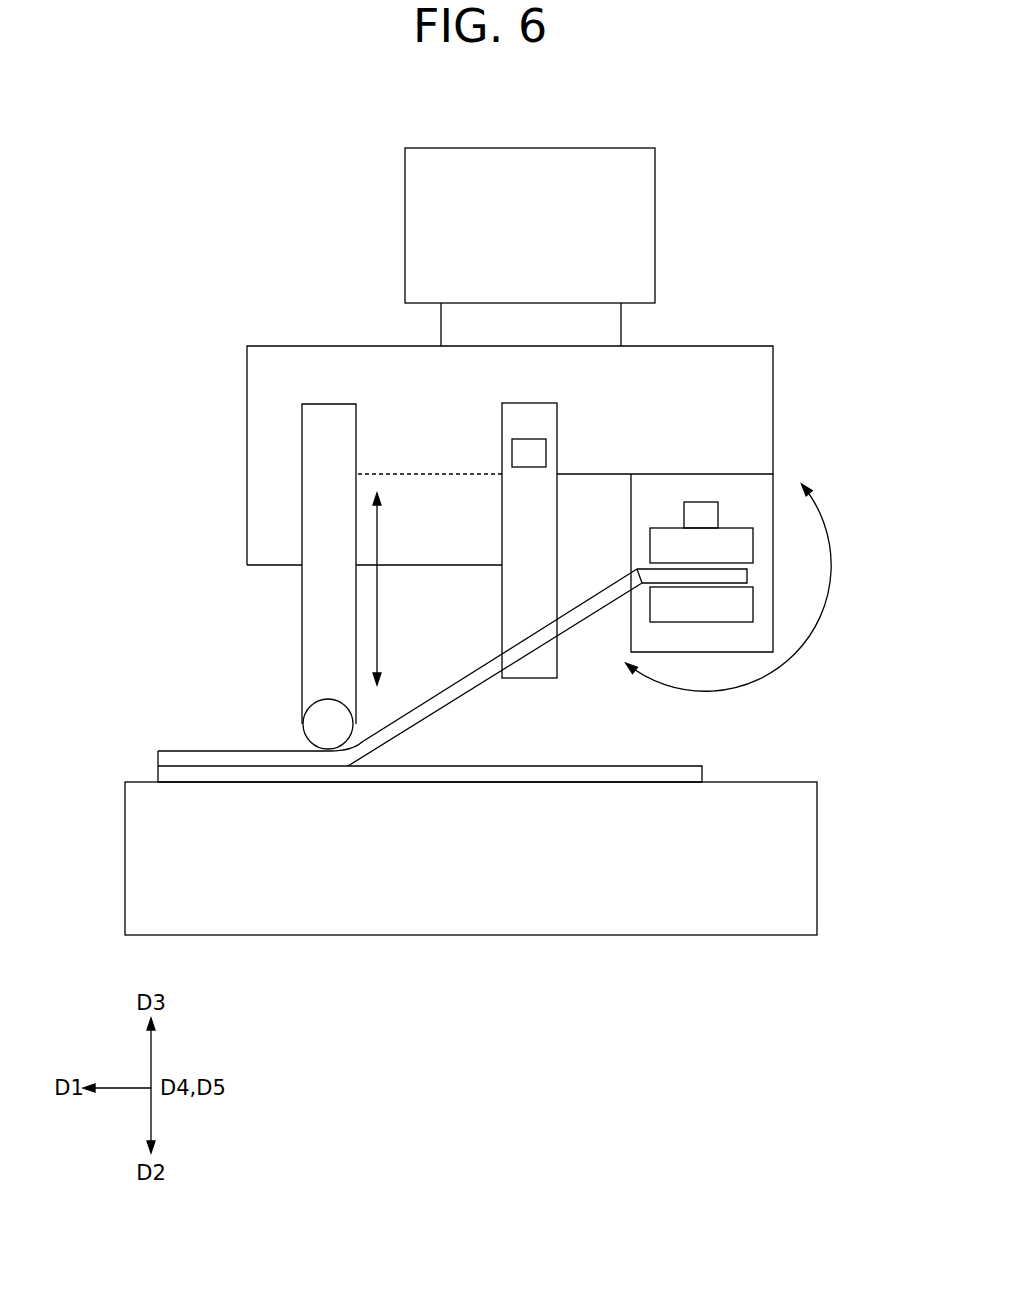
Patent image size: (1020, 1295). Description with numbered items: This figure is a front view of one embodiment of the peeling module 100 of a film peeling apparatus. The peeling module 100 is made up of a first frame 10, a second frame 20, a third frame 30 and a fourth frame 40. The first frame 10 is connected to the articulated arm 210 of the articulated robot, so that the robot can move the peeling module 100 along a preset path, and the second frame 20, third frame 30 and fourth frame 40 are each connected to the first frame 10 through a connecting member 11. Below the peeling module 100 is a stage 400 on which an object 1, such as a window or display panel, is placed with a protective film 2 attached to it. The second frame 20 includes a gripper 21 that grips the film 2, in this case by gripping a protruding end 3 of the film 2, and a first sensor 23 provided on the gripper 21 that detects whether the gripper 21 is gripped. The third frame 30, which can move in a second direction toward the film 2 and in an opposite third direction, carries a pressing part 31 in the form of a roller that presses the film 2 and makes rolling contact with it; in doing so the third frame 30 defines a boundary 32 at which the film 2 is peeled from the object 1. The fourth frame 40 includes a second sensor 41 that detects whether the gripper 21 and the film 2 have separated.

The object 1 is at (158, 774).
The film 2 is at (158, 758).
The protruding end 3 is at (747, 573).
The first frame 10 is at (415, 318).
The connecting member 11 is at (247, 370).
The second frame 20 is at (697, 457).
The gripper 21 is at (710, 553).
The first sensor 23 is at (718, 511).
The third frame 30 is at (282, 589).
The pressing part 31 is at (305, 718).
The boundary 32 is at (333, 768).
The fourth frame 40 is at (484, 400).
The second sensor 41 is at (546, 452).
The peeling module 100 is at (97, 345).
The articulated arm 210 is at (655, 225).
The stage 400 is at (125, 862).